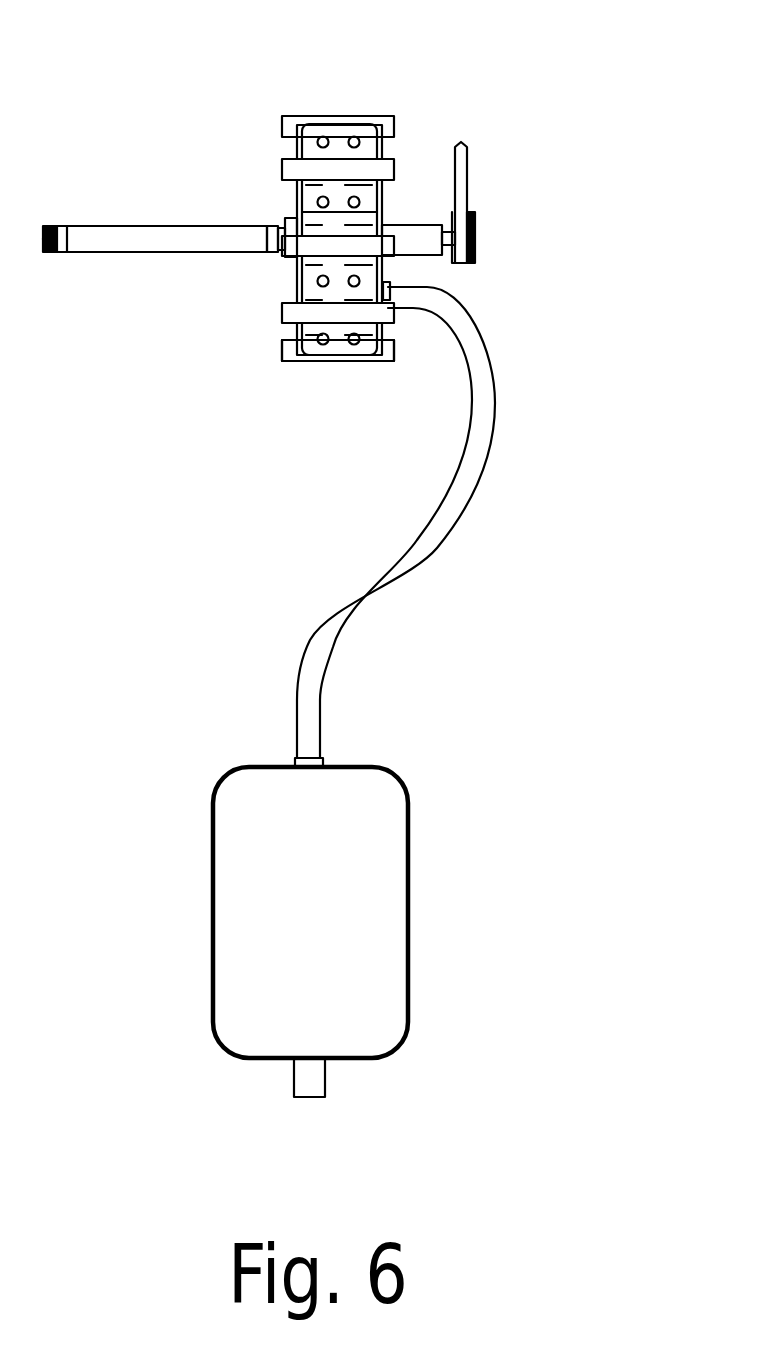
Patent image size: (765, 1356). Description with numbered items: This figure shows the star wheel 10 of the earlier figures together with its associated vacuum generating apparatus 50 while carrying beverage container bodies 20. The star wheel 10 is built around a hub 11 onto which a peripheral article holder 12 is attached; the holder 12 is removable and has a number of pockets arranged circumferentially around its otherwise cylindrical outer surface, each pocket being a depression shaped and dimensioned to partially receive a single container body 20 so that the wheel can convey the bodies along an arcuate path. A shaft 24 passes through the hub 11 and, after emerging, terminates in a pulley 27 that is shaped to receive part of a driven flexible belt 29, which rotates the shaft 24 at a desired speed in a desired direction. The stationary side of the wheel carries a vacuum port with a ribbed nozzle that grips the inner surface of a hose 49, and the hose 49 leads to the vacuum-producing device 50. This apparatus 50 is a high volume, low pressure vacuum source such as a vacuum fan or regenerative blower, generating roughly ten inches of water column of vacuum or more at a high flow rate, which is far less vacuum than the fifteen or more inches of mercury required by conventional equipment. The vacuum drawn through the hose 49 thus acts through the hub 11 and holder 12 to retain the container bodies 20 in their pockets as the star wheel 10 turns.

The star wheel 10 is at (292, 181).
The hub 11 is at (295, 200).
The peripheral article holder 12 is at (377, 147).
The beverage container body 20 is at (282, 162).
The shaft 24 is at (107, 237).
The pulley 27 is at (475, 253).
The driven flexible belt 29 is at (468, 172).
The hose 49 is at (422, 542).
The vacuum-generating apparatus 50 is at (330, 923).